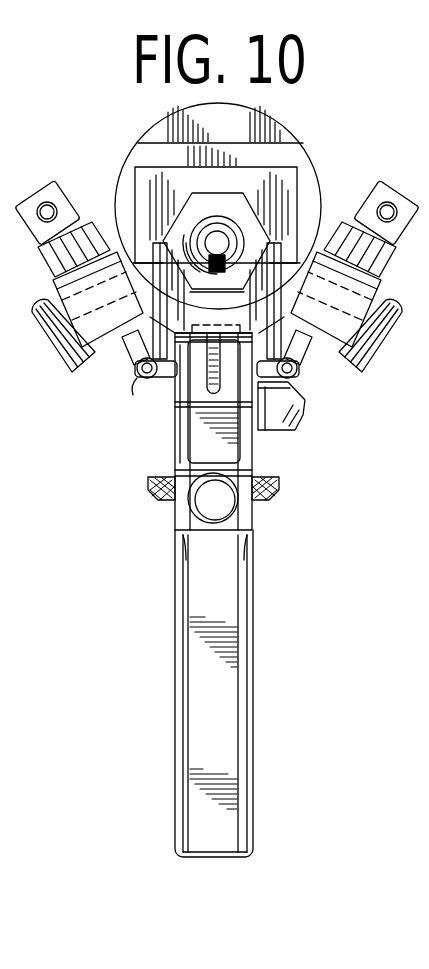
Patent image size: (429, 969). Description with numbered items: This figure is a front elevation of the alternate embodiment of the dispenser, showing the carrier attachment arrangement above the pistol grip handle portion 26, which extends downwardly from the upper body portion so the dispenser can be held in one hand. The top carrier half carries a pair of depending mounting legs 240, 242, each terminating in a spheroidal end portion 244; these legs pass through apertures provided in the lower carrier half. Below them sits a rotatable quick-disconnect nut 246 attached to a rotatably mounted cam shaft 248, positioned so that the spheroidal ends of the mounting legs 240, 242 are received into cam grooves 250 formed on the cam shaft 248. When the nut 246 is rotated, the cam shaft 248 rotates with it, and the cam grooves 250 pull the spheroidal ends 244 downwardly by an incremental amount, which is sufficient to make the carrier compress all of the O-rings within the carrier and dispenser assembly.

The pistol grip handle portion 26 is at (200, 595).
The mounting leg 240 is at (130, 328).
The mounting leg 242 is at (268, 321).
The spheroidal end portion 244 is at (135, 362).
The quick-disconnect nut 246 is at (253, 446).
The cam shaft 248 is at (136, 384).
The cam grooves 250 is at (152, 390).